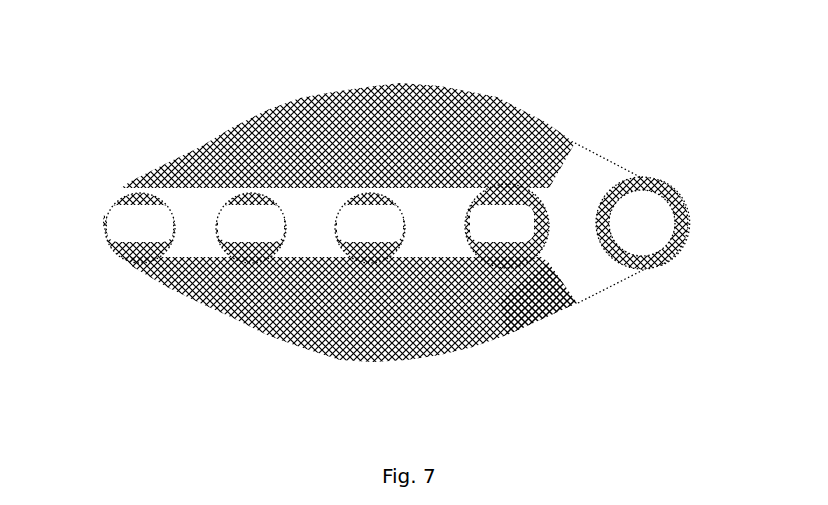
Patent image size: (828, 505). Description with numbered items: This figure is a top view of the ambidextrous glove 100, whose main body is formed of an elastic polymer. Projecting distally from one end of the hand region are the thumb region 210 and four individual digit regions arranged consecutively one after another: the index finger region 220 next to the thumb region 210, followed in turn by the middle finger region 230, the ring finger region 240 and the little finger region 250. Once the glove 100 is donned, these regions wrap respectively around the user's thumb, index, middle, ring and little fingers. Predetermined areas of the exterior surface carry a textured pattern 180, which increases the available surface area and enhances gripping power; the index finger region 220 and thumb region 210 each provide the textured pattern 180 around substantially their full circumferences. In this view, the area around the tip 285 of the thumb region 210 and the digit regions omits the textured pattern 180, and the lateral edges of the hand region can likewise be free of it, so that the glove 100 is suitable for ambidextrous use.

The glove 100 is at (106, 85).
The little finger region 250 is at (137, 215).
The ring finger region 240 is at (252, 197).
The middle finger region 230 is at (365, 183).
The index finger region 220 is at (523, 177).
The thumb region 210 is at (657, 185).
The distal edge 285 is at (668, 235).
The textured pattern 180 is at (522, 295).